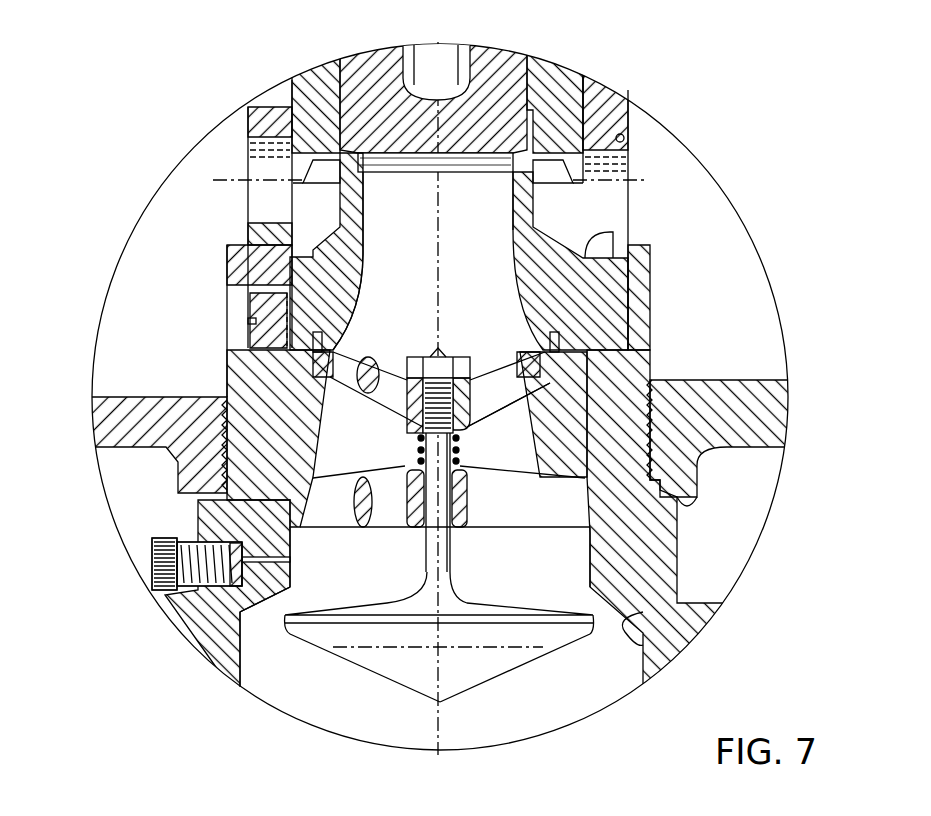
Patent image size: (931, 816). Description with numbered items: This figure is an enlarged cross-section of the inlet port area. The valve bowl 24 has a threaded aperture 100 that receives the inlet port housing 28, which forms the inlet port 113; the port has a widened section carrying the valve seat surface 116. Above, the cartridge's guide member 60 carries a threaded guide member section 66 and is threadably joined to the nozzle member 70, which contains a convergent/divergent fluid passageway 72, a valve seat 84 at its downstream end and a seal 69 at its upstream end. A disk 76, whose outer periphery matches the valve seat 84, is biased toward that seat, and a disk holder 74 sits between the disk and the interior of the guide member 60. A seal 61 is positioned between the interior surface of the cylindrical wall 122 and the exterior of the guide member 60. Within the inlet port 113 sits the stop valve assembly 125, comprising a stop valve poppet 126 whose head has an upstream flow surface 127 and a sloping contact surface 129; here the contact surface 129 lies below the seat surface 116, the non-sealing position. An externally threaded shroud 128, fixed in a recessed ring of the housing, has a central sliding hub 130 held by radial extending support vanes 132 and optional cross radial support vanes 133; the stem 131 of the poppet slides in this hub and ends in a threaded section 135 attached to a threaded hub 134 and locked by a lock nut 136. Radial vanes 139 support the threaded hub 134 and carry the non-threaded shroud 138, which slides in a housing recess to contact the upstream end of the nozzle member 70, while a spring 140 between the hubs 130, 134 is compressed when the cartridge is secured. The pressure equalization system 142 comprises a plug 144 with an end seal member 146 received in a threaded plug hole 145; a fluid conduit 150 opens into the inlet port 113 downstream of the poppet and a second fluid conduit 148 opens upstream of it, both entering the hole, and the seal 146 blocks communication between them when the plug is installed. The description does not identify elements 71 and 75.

The valve bowl 24 is at (745, 405).
The inlet port housing 28 is at (655, 300).
The guide member 60 is at (278, 105).
The seal 61 is at (252, 328).
The threaded guide member section 66 is at (267, 230).
The seal 69 is at (298, 368).
The nozzle member 70 is at (340, 255).
The curved bore surface 71 is at (352, 330).
The convergent/divergent fluid passageway 72 is at (438, 212).
The disk holder 74 is at (585, 85).
The seal recess 75 is at (248, 320).
The disk 76 is at (507, 60).
The valve seat 84 is at (374, 158).
The threaded aperture 100 is at (662, 390).
The inlet port 113 is at (440, 557).
The valve seat surface 116 is at (633, 620).
The cylindrical wall 122 is at (652, 270).
The stop valve assembly 125 is at (320, 700).
The stop valve poppet 126 is at (480, 663).
The upstream flow surface 127 is at (357, 670).
The externally threaded shroud 128 is at (200, 513).
The sloping contact surface 129 is at (497, 602).
The central sliding hub 130 is at (462, 500).
The stem 131 is at (448, 565).
The radial extending support vanes 132 is at (335, 512).
The cross radial support vanes 133 is at (383, 490).
The threaded hub 134 is at (417, 413).
The threaded section 135 is at (418, 378).
The lock nut 136 is at (460, 357).
The shroud 138 is at (470, 367).
The radial vanes 139 is at (490, 397).
The spring 140 is at (460, 448).
The pressure equalization system 142 is at (150, 562).
The plug 144 is at (193, 577).
The threaded plug hole 145 is at (190, 587).
The end seal member 146 is at (227, 610).
The second fluid conduit 148 is at (273, 593).
The fluid conduit 150 is at (290, 560).